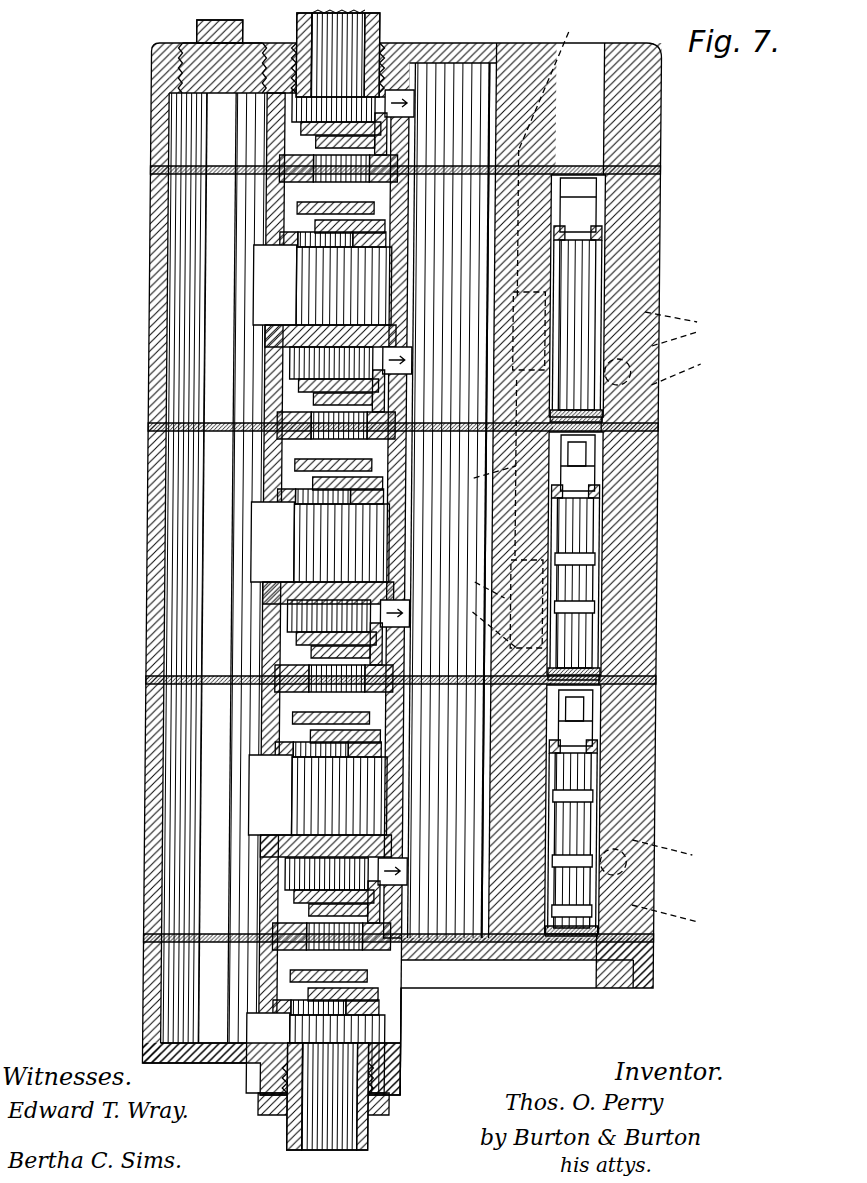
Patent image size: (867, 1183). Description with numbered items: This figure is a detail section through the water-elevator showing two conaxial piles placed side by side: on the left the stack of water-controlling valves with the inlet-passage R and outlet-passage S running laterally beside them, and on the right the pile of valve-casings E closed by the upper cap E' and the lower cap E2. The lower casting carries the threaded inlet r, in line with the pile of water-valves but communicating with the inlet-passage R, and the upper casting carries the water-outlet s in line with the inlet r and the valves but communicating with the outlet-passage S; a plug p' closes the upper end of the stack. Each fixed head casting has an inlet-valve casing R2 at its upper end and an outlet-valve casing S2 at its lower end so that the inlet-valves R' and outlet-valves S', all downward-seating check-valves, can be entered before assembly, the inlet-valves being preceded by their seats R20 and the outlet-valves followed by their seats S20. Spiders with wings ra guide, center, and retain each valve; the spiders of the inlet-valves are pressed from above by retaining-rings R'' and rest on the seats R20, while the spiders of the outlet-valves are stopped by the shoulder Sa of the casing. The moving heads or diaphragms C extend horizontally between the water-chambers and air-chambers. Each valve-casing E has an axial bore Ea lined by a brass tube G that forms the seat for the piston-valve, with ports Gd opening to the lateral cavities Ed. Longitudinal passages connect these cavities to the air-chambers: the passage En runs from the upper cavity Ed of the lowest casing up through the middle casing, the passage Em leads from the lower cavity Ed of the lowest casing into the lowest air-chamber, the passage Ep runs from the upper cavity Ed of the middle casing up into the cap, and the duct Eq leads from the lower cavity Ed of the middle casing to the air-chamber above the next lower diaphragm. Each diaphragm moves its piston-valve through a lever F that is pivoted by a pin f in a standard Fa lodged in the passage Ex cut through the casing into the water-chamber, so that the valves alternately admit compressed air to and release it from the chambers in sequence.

The threaded plug p' is at (185, 64).
The water-outlet s is at (366, 33).
The threaded inlet r is at (380, 1065).
The spider wings ra is at (300, 128).
The outlet-valve casing S2 is at (302, 140).
The shoulder Sa is at (310, 126).
The outlet-valve S' is at (338, 515).
The outlet-valve seat S20 is at (396, 170).
The retaining-ring R'' is at (350, 588).
The inlet-valve casing R2 is at (305, 220).
The inlet-valve R' is at (299, 620).
The inlet-valve seat R20 is at (437, 1030).
The inlet-passage R is at (175, 568).
The outlet-passage S is at (378, 500).
The moving head or diaphragm C is at (152, 427).
The passage Ep is at (512, 249).
The upper cap of the valve-casings E' is at (658, 515).
The passage for the lever standard Ex is at (603, 180).
The axial bore Ea is at (585, 210).
The valve-casing E is at (612, 515).
The brass lining tube G is at (602, 280).
The lateral cavity Ed is at (585, 577).
The passage En is at (664, 365).
The passage Em is at (663, 891).
The duct Eq is at (493, 604).
The standard Fa is at (592, 438).
The lever F is at (596, 724).
The pivot-pin f is at (582, 472).
The port Gd is at (596, 606).
The lower cap of the valve-casings E2 is at (590, 962).